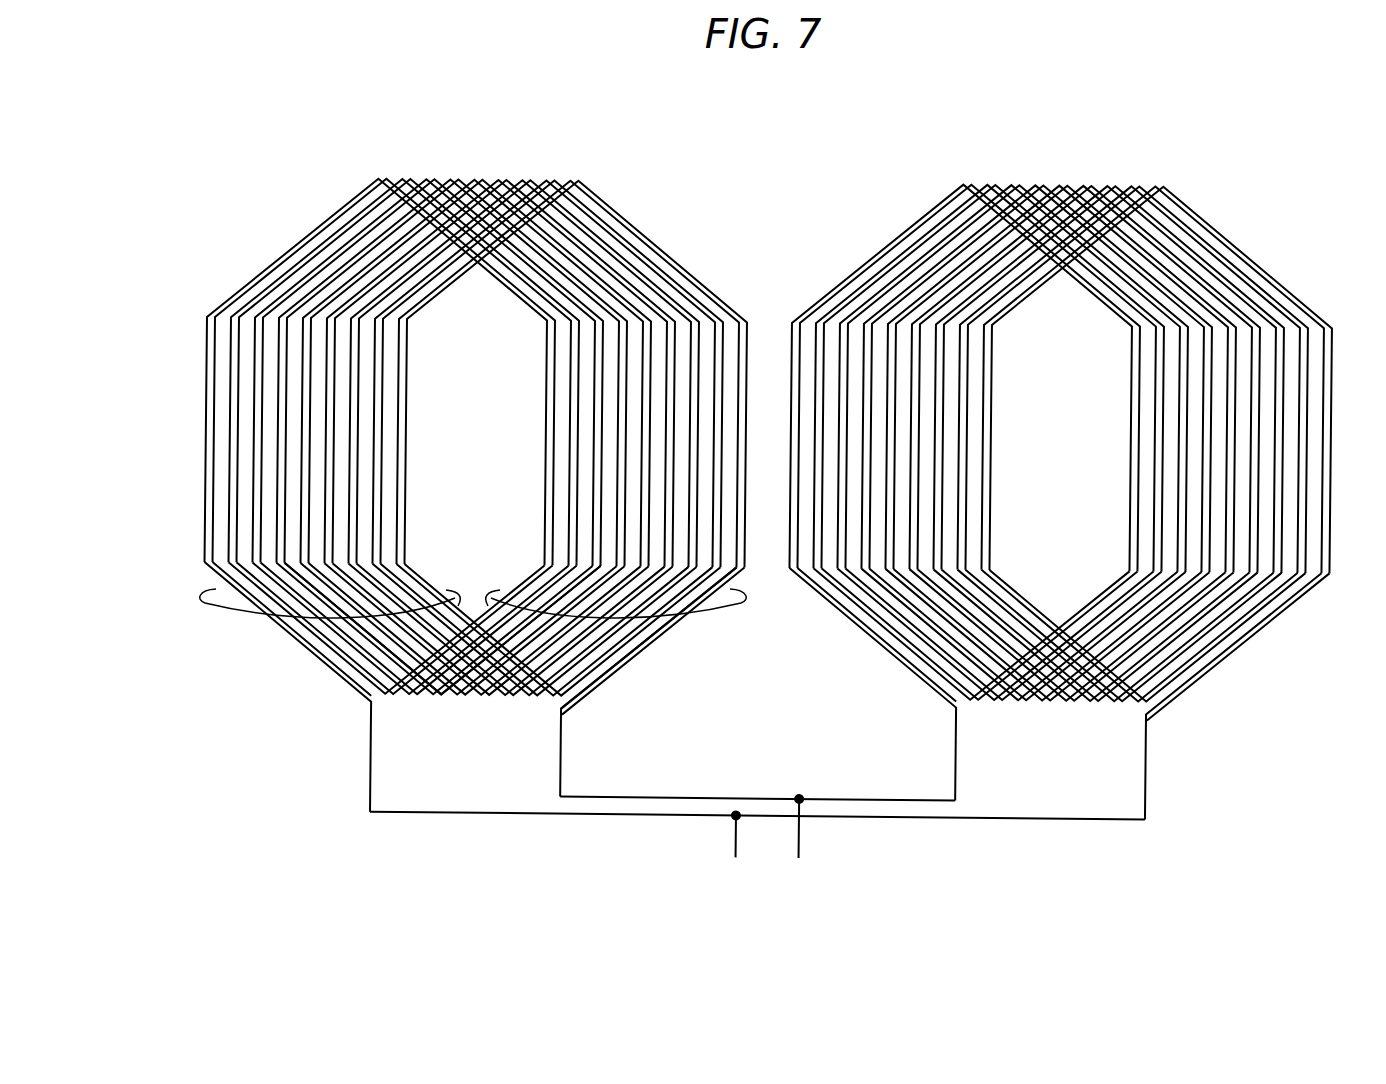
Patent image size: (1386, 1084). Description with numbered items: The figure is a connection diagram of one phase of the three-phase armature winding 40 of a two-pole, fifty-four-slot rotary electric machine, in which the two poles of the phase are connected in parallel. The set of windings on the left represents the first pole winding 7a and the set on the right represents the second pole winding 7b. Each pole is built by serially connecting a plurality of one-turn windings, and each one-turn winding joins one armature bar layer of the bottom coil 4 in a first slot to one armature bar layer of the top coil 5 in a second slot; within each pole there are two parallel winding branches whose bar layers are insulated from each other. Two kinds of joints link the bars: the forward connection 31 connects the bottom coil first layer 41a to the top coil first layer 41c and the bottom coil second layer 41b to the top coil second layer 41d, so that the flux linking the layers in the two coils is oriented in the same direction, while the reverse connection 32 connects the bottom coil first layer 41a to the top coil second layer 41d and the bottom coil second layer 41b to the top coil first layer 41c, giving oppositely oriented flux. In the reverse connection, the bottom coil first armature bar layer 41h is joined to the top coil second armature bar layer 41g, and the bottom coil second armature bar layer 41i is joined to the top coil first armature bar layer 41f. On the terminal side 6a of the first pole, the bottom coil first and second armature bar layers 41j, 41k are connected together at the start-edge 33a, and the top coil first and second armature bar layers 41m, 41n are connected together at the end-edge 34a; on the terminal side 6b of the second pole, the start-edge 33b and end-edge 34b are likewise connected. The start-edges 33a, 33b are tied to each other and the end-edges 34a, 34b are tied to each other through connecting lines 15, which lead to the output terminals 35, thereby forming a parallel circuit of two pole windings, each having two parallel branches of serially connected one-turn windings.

The three-phase armature winding 40 is at (886, 147).
The first pole winding 7a is at (489, 164).
The second pole winding 7b is at (1091, 169).
The bottom coil 4 is at (215, 608).
The top coil 5 is at (748, 600).
The terminal side 6a is at (435, 714).
The terminal side 6b is at (1043, 719).
The connecting lines 15 is at (843, 785).
The forward connection 31 is at (433, 178).
The reverse connection 32 is at (525, 178).
The start-edge 33a is at (370, 703).
The start-edge 33b is at (1158, 706).
The end-edge 34a is at (580, 707).
The end-edge 34b is at (955, 706).
The output terminals 35 is at (727, 846).
The bottom coil first layer 41a is at (353, 630).
The bottom coil second layer 41b is at (368, 637).
The top coil first layer 41c is at (620, 625).
The top coil second layer 41d is at (600, 643).
The top coil first armature bar layer 41f is at (597, 672).
The top coil second armature bar layer 41g is at (585, 685).
The bottom coil first armature bar layer 41h is at (386, 545).
The bottom coil second armature bar layer 41i is at (378, 523).
The bottom coil first armature bar layer 41j is at (213, 432).
The bottom coil second armature bar layer 41k is at (207, 462).
The top coil first armature bar layer 41m is at (625, 218).
The top coil second armature bar layer 41n is at (667, 252).